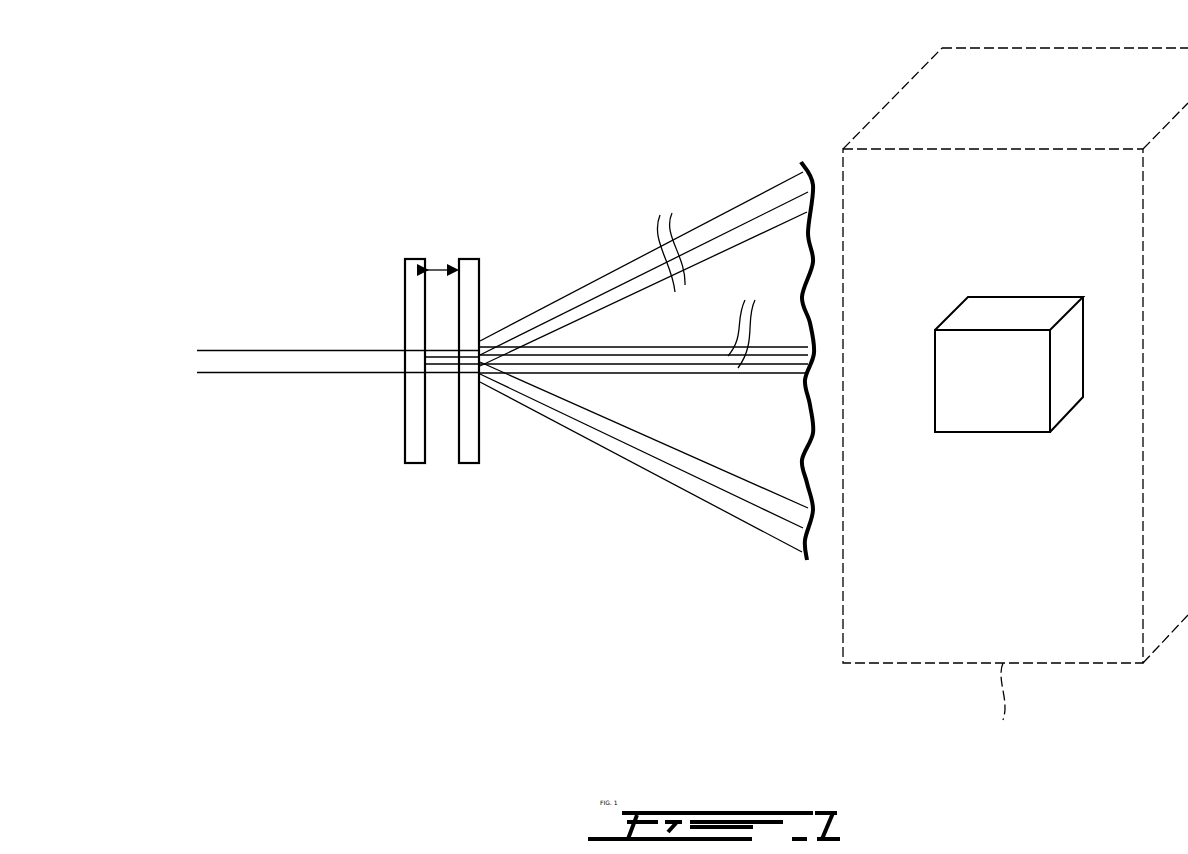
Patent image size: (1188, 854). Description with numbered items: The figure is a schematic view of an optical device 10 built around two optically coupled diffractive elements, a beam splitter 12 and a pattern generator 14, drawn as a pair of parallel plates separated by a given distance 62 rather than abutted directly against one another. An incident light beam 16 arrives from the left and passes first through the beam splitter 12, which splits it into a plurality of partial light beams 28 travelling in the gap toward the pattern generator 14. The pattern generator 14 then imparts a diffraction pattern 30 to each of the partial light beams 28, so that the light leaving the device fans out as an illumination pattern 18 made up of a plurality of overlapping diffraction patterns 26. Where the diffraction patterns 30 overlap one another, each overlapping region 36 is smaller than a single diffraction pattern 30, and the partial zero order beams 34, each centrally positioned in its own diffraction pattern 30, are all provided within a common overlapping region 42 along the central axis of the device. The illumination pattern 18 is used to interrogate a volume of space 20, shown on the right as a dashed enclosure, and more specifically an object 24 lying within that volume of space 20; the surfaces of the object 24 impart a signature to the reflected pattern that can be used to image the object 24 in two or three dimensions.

The optical device 10 is at (443, 608).
The beam splitter 12 is at (413, 465).
The pattern generator 14 is at (468, 465).
The incident light beam 16 is at (240, 363).
The illumination pattern 18 is at (731, 200).
The volume of space 20 is at (1015, 403).
The object 24 is at (990, 433).
The overlapping diffraction patterns 26 is at (785, 213).
The partial light beams 28 is at (443, 356).
The diffraction pattern 30 is at (610, 272).
The partial zero order beam 34 is at (644, 320).
The overlapping region 36 is at (670, 237).
The common overlapping region 42 is at (630, 405).
The given distance 62 is at (442, 268).